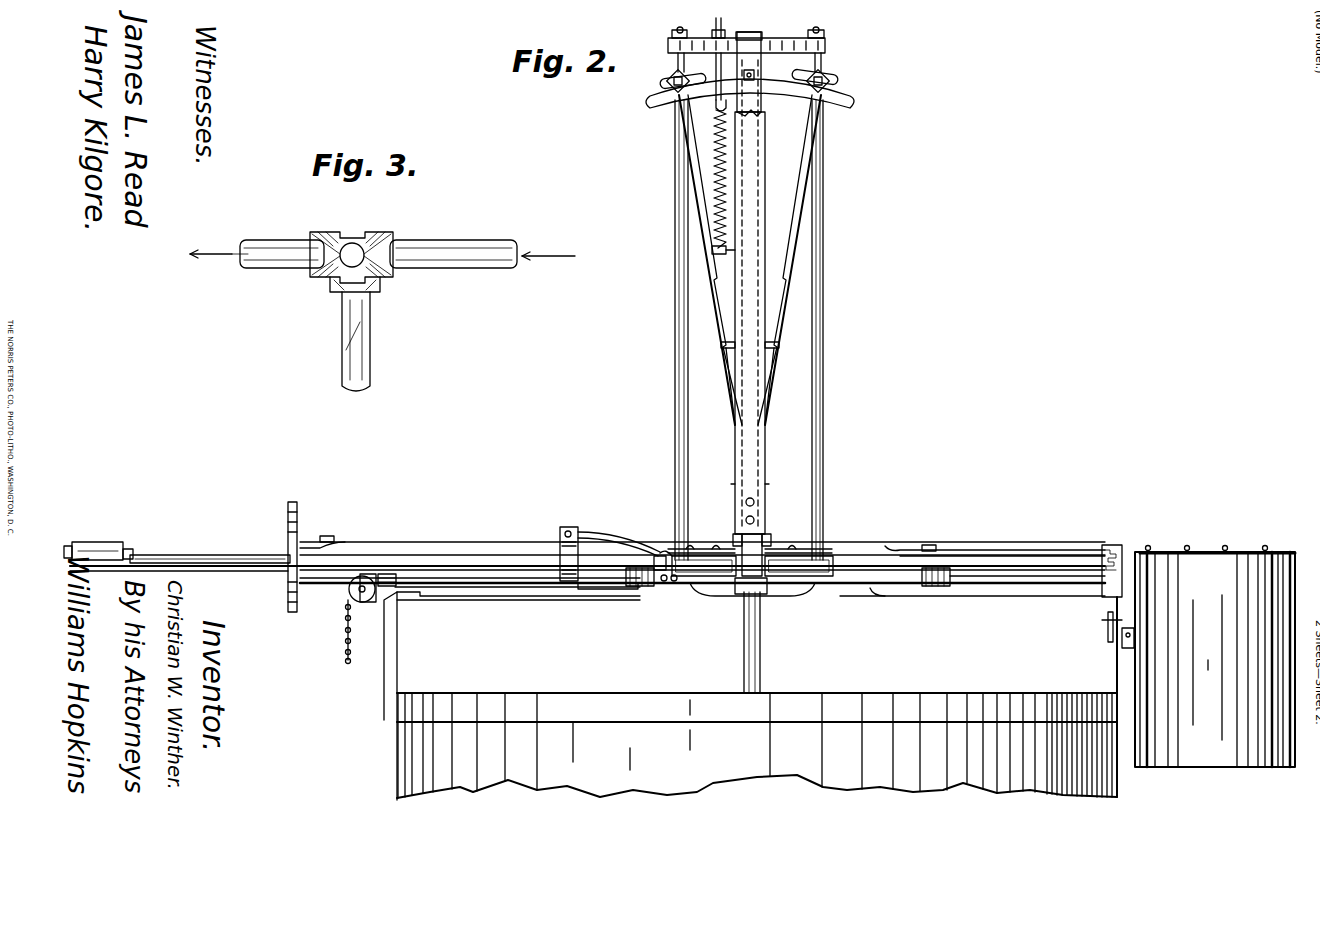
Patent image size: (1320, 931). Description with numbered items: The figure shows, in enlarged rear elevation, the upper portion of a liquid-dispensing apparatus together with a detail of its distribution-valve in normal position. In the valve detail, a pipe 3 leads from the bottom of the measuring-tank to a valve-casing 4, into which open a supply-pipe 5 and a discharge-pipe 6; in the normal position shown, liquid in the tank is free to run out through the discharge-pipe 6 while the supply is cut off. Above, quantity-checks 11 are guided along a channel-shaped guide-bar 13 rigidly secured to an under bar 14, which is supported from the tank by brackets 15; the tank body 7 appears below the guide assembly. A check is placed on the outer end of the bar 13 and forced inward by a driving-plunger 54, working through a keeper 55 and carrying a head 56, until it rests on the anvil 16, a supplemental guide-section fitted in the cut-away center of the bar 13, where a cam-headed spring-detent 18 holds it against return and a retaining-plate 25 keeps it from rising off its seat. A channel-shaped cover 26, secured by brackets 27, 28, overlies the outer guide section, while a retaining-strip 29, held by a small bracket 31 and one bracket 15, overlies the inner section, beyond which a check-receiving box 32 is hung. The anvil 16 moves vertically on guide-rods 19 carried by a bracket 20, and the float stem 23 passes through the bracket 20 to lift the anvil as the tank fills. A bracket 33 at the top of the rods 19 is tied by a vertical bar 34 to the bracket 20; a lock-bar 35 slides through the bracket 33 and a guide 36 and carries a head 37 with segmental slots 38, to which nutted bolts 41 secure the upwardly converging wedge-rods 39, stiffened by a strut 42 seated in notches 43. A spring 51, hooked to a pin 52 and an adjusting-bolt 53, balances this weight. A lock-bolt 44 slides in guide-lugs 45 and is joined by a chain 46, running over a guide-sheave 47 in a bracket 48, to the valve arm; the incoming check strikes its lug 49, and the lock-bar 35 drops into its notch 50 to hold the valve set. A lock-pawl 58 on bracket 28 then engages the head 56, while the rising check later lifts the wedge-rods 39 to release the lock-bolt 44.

In FIG. 3, the pipe 3 is at (465, 250).
In FIG. 3, the valve-casing 4 is at (385, 240).
In FIG. 3, the supply-pipe 5 is at (372, 345).
In FIG. 3, the discharge-pipe 6 is at (265, 256).
In FIG. 2, the base box 7 is at (792, 703).
In FIG. 2, the quantity-check 11 is at (225, 555).
In FIG. 2, the channel-shaped guide-bar 13 is at (255, 568).
In FIG. 2, the under bar 14 is at (1012, 578).
In FIG. 2, the brackets 15 is at (398, 648).
In FIG. 2, the anvil 16 is at (728, 562).
In FIG. 2, the cam-headed spring-detent 18 is at (692, 546).
In FIG. 2, the vertical guide-rods 19 is at (675, 425).
In FIG. 2, the bracket 20 is at (774, 590).
In FIG. 2, the stem 23 is at (748, 652).
In FIG. 2, the retaining-plate 25 is at (806, 556).
In FIG. 2, the channel-shaped cover 26 is at (442, 546).
In FIG. 2, the bracket 27 is at (299, 522).
In FIG. 2, the bracket 28 is at (572, 530).
In FIG. 2, the retaining-strip 29 is at (985, 549).
In FIG. 2, the small bracket 31 is at (930, 546).
In FIG. 2, the check-receiving box 32 is at (1193, 582).
In FIG. 2, the bracket 33 is at (828, 47).
In FIG. 2, the vertical bar 34 is at (763, 252).
In FIG. 2, the lock-bar 35 is at (756, 40).
In FIG. 2, the guide 36 is at (768, 483).
In FIG. 2, the head 37 is at (830, 105).
In FIG. 2, the segmental slots 38 is at (838, 88).
In FIG. 2, the wedge-rods 39 is at (752, 210).
In FIG. 2, the nutted bolts 41 is at (676, 94).
In FIG. 2, the strut 42 is at (730, 368).
In FIG. 2, the notches 43 is at (716, 318).
In FIG. 2, the lock-bolt 44 is at (535, 588).
In FIG. 2, the guide-lugs 45 is at (640, 586).
In FIG. 2, the chain 46 is at (347, 652).
In FIG. 2, the guide-sheave 47 is at (368, 578).
In FIG. 2, the bracket 48 is at (364, 603).
In FIG. 2, the lug 49 is at (662, 578).
In FIG. 2, the notch or shoulder 50 is at (580, 590).
In FIG. 2, the spring 51 is at (716, 170).
In FIG. 2, the pin 52 is at (720, 247).
In FIG. 2, the nutted adjusting-bolt 53 is at (712, 22).
In FIG. 2, the driving-plunger 54 is at (66, 545).
In FIG. 2, the keeper 55 is at (107, 542).
In FIG. 2, the head 56 is at (130, 548).
In FIG. 2, the lock-pawl 58 is at (622, 546).